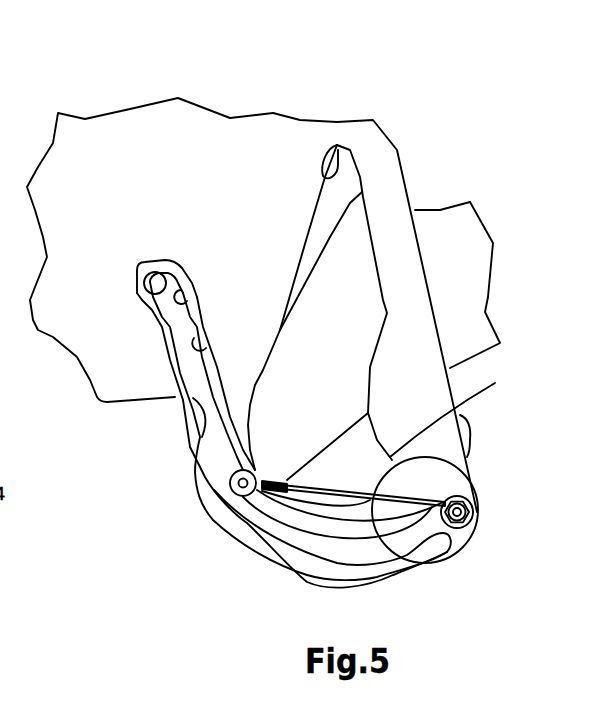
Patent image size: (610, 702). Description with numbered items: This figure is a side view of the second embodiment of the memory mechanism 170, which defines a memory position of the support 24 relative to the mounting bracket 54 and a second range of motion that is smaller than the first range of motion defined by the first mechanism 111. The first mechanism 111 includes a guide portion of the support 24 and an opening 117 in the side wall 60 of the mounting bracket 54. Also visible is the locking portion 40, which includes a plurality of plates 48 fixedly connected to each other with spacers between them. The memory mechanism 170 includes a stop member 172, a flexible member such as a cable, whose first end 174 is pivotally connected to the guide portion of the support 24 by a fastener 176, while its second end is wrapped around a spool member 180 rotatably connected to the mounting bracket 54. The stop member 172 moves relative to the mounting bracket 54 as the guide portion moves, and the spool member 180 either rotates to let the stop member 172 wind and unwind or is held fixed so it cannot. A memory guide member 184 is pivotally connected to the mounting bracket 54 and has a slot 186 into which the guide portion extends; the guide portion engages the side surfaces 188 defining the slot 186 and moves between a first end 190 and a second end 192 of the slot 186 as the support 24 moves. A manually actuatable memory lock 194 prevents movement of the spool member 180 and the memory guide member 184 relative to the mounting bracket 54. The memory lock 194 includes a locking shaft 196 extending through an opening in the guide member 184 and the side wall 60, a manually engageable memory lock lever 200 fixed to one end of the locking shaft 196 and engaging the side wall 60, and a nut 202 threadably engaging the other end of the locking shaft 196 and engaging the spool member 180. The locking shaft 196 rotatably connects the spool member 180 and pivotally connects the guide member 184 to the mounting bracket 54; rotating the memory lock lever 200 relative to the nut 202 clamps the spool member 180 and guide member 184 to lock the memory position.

The support 24 is at (465, 247).
The locking portion 40 is at (460, 313).
The plates 48 is at (442, 223).
The mounting bracket 54 is at (248, 147).
The side wall 60 is at (193, 140).
The first mechanism 111 is at (515, 333).
The opening 117 is at (335, 145).
The memory mechanism 170 is at (497, 523).
The stop member 172 is at (443, 420).
The first end 174 is at (263, 477).
The fastener 176 is at (263, 480).
The spool member 180 is at (452, 560).
The memory guide member 184 is at (153, 270).
The slot 186 is at (179, 292).
The side surfaces 188 is at (212, 327).
The first end of the slot 190 is at (397, 563).
The second end of the slot 192 is at (150, 301).
The memory lock 194 is at (484, 539).
The locking shaft 196 is at (474, 511).
The memory lock lever 200 is at (472, 432).
The nut 202 is at (470, 497).